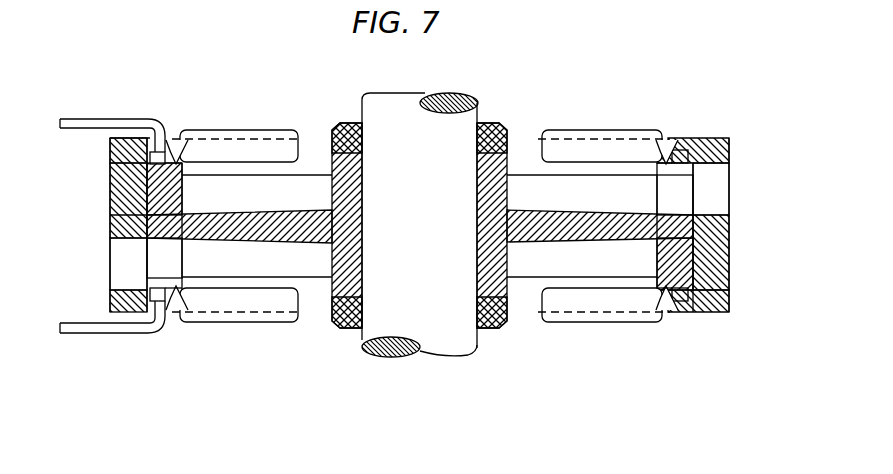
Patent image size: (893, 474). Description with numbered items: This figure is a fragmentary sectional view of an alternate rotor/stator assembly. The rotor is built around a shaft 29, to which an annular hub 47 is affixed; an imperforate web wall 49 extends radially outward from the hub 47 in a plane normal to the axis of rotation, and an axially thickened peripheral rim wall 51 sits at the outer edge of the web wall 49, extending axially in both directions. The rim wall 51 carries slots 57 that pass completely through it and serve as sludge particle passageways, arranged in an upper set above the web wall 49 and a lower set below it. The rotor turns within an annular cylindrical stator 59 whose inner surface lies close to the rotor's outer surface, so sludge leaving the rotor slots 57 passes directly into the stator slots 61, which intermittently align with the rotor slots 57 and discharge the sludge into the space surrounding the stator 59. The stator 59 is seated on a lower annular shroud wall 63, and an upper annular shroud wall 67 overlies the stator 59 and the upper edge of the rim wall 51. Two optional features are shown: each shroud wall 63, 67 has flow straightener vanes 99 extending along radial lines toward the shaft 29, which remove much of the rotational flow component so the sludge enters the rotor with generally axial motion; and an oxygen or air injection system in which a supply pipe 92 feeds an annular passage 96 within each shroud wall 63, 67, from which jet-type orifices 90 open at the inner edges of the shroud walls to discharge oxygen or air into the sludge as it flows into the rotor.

The shaft 29 is at (387, 105).
The annular hub 47 is at (358, 192).
The web wall 49 is at (283, 237).
The rim wall 51 is at (178, 198).
The slots 57 is at (178, 260).
The stator 59 is at (120, 192).
The stator slots 61 is at (118, 252).
The lower annular shroud wall 63 is at (126, 312).
The upper annular shroud wall 67 is at (712, 139).
The jet-type orifices 90 is at (183, 140).
The oxygen or air supply pipe 92 is at (90, 122).
The annular passage 96 is at (112, 146).
The flow straightener vanes 99 is at (263, 136).